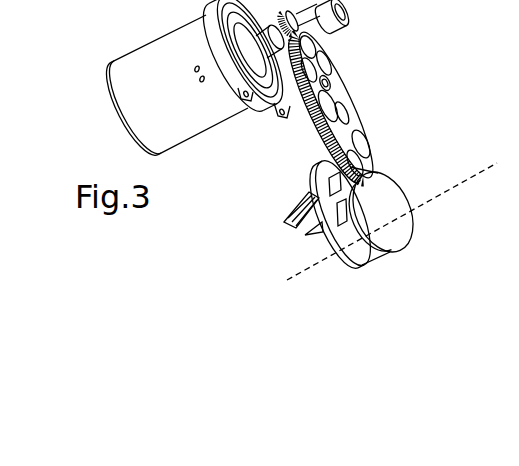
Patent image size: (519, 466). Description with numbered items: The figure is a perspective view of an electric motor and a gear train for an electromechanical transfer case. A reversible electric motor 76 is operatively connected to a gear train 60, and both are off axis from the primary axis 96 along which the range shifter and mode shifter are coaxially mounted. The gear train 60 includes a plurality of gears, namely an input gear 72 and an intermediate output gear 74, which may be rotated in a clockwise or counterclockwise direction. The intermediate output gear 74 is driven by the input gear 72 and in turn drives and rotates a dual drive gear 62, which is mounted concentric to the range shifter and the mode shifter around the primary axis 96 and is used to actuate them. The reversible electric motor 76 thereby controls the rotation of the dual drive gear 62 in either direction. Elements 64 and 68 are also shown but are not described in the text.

The gear train 60 is at (352, 92).
The dual drive gear 62 is at (322, 169).
The mounting bracket 64 is at (284, 223).
The wedge support 68 is at (336, 240).
The input gear 72 is at (322, 70).
The intermediate output gear 74 is at (375, 155).
The reversible electric motor 76 is at (135, 65).
The primary axis 96 is at (483, 172).